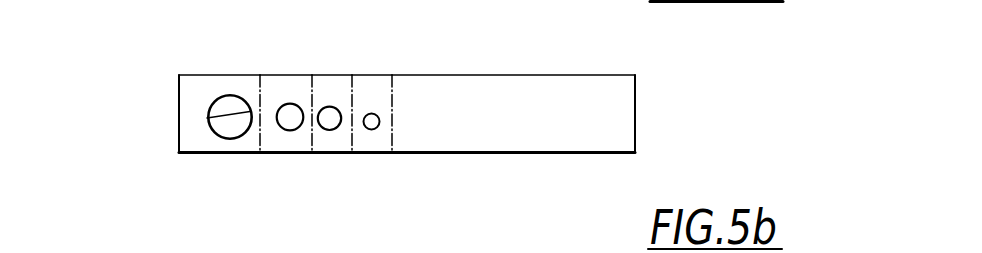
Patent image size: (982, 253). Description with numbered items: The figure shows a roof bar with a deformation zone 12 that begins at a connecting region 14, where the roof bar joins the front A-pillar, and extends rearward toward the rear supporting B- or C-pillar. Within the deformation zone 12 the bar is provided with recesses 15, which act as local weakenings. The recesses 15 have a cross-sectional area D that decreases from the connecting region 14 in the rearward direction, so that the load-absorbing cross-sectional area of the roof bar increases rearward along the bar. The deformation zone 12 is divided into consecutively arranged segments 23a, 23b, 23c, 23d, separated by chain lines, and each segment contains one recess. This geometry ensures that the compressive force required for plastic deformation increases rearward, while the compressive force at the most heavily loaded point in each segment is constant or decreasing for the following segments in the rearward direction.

The connecting region 14 is at (178, 94).
The first segment 23a is at (205, 141).
The second segment 23b is at (285, 85).
The third segment 23c is at (342, 85).
The fourth segment 23d is at (380, 83).
The deformation zone 12 is at (318, 92).
The recesses 15 is at (367, 125).
The cross-sectional area D is at (207, 118).